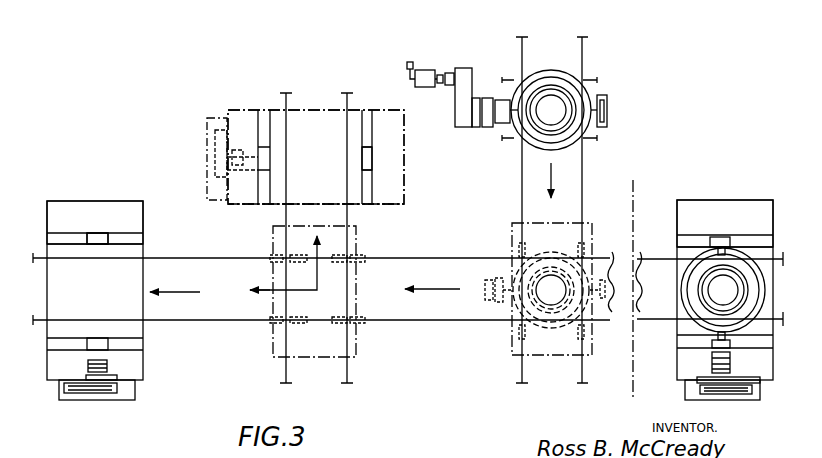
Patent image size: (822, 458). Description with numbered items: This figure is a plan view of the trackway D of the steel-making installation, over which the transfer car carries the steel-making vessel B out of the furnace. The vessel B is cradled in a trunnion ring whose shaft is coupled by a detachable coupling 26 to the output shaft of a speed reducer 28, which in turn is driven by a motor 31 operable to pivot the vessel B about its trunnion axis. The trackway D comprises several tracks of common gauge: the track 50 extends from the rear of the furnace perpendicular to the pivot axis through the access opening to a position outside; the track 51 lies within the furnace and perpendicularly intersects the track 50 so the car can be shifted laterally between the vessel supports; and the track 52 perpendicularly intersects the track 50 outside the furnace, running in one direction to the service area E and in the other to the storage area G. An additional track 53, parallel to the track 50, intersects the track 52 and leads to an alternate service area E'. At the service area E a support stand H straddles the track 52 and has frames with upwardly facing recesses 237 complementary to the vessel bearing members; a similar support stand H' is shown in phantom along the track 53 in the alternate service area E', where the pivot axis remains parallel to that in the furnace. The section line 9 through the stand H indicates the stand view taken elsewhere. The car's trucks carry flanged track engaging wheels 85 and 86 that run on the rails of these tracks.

The detachable coupling 26 is at (485, 128).
The speed reducer 28 is at (462, 68).
The motor 31 is at (420, 69).
The track 50 is at (583, 181).
The track 51 is at (587, 78).
The track 52 is at (233, 323).
The additional track 53 is at (343, 214).
The flanged track engaging wheel 85 is at (282, 316).
The flanged track engaging wheel 86 is at (297, 318).
The upwardly facing recess 237 is at (97, 240).
The section line 9- 9 is at (633, 180).
The steel-making vessel B is at (563, 69).
The trackway D is at (457, 334).
The service area E is at (75, 285).
The alternate service area E' is at (305, 138).
The storage area G is at (752, 196).
The support stand H is at (410, 207).
The support stand H' is at (316, 136).